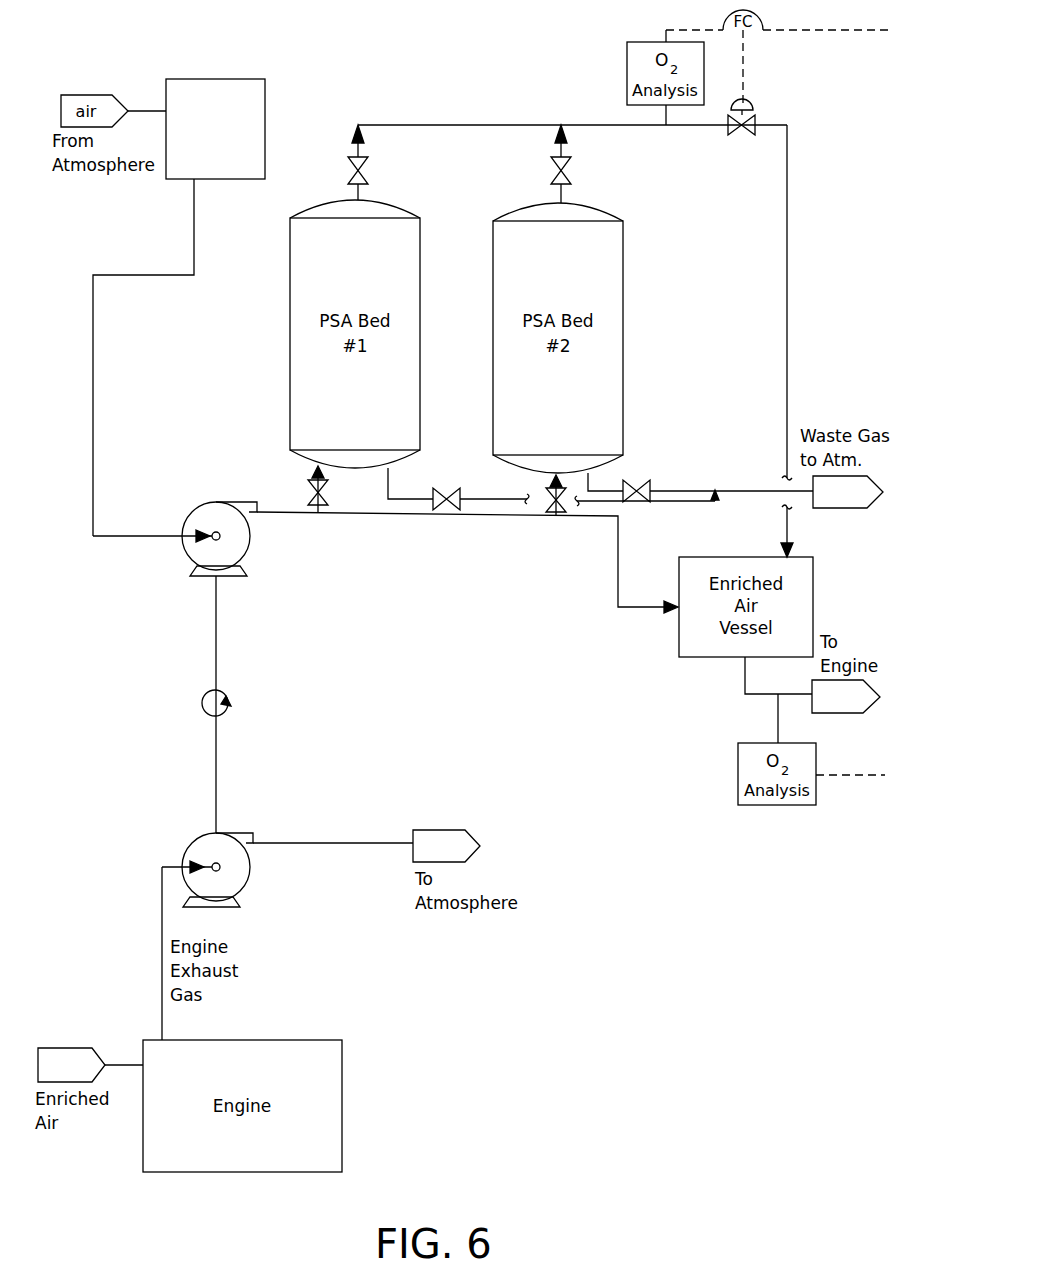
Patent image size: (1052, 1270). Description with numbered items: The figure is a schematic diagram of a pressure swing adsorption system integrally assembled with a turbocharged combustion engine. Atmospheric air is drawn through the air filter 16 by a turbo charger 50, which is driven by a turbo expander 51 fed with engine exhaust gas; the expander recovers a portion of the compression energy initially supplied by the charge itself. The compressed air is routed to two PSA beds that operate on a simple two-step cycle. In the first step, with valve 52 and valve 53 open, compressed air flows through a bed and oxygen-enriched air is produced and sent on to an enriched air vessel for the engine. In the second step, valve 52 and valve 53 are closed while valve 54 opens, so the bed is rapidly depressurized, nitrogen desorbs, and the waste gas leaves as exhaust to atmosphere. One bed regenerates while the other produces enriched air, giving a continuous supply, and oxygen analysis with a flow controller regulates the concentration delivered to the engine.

The air filter 16 is at (255, 120).
The turbo charger 50 is at (228, 502).
The turbo expander 51 is at (228, 833).
The valve 52 is at (326, 492).
The valve 53 is at (370, 172).
The valve 54 is at (450, 505).